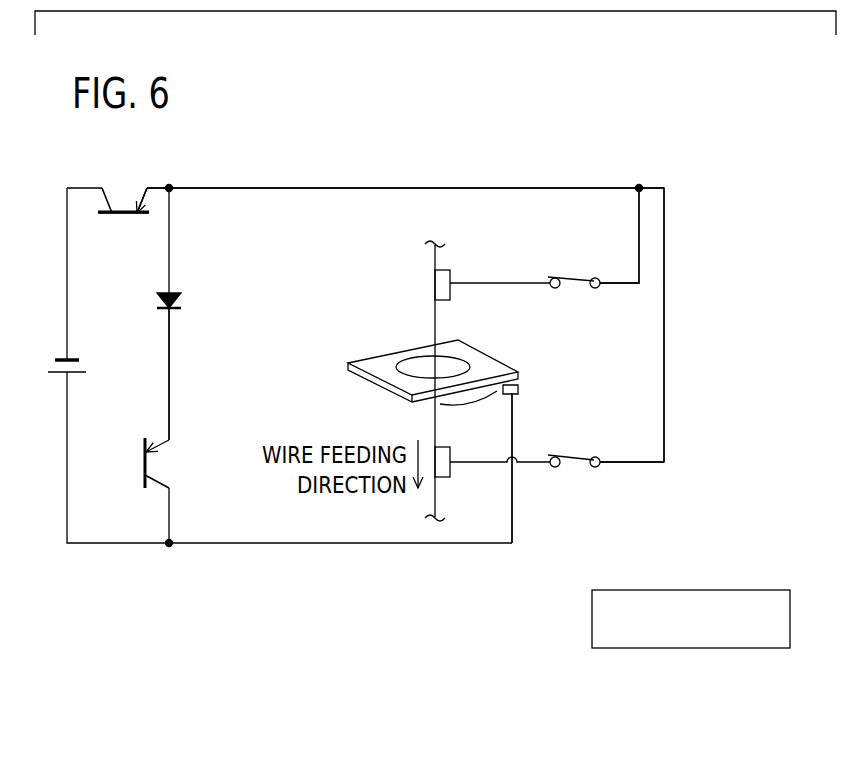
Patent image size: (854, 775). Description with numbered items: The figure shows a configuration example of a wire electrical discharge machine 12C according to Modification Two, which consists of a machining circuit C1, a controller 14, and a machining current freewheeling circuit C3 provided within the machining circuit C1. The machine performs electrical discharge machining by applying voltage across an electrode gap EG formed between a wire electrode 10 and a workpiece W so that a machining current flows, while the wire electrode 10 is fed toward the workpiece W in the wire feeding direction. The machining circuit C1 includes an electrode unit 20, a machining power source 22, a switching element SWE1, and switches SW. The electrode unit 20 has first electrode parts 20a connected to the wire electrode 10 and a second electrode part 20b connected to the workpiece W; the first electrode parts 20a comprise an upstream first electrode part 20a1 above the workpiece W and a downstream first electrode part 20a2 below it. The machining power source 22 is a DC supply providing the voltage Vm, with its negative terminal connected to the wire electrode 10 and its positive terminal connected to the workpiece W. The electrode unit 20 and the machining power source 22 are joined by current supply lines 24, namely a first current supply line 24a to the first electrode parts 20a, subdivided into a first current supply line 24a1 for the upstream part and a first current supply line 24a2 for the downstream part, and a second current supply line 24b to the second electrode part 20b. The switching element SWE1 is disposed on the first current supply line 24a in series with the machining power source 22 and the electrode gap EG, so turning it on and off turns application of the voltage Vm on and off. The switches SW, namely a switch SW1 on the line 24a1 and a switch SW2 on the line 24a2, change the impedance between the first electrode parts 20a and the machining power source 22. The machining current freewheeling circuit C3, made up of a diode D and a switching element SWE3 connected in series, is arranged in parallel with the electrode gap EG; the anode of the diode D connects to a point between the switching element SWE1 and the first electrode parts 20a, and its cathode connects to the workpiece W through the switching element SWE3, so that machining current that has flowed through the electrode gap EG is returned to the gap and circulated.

The wire electrical discharge machine 12C is at (277, 125).
The machining power source 22 is at (52, 352).
The voltage Vm is at (44, 390).
The switching element SWE1 is at (122, 222).
The switching element SWE3 is at (151, 435).
The diode D is at (179, 283).
The machining current freewheeling circuit C3 is at (160, 362).
The machining circuit C1 is at (520, 182).
The switches SW is at (574, 368).
The switch SW1 is at (562, 265).
The switch SW2 is at (582, 471).
The wire electrode 10 is at (435, 327).
The workpiece W is at (383, 362).
The electrode gap EG is at (417, 373).
The electrode unit 20 is at (222, 435).
The first electrode parts 20a is at (337, 373).
The first electrode part 20a1 is at (433, 283).
The first electrode part 20a2 is at (443, 447).
The second electrode part 20b is at (433, 403).
The current supply lines 24 is at (803, 262).
The first current supply line 24a is at (701, 325).
The first current supply line 24a1 is at (639, 268).
The first current supply line 24a2 is at (664, 319).
The second current supply line 24b is at (512, 425).
The controller 14 is at (738, 588).